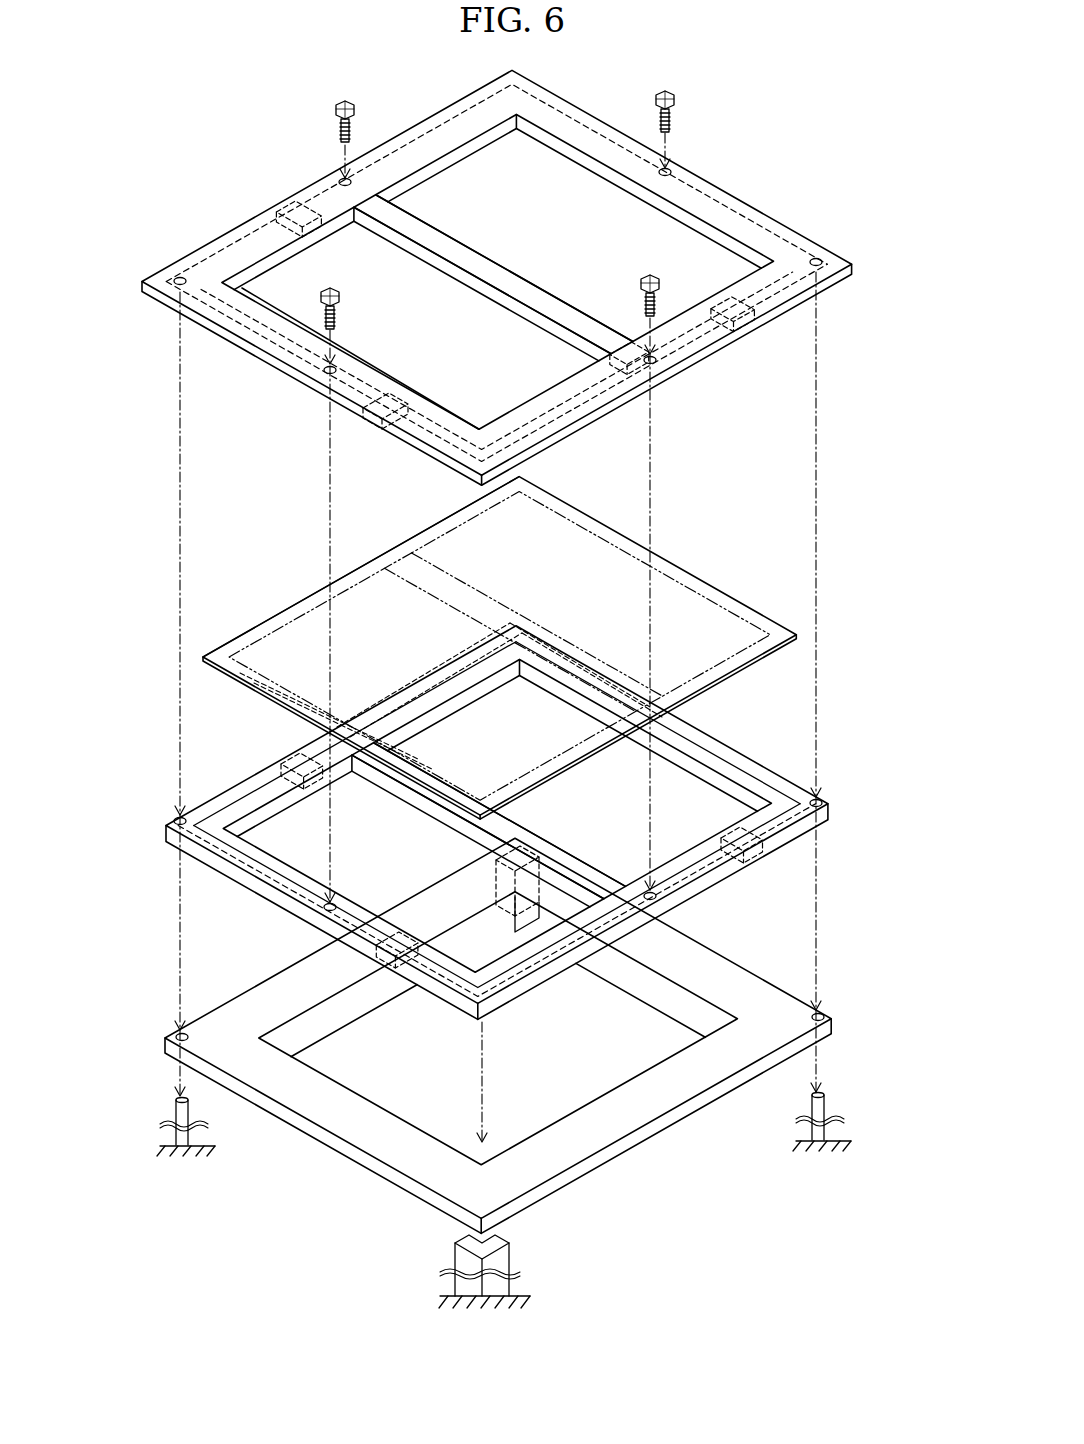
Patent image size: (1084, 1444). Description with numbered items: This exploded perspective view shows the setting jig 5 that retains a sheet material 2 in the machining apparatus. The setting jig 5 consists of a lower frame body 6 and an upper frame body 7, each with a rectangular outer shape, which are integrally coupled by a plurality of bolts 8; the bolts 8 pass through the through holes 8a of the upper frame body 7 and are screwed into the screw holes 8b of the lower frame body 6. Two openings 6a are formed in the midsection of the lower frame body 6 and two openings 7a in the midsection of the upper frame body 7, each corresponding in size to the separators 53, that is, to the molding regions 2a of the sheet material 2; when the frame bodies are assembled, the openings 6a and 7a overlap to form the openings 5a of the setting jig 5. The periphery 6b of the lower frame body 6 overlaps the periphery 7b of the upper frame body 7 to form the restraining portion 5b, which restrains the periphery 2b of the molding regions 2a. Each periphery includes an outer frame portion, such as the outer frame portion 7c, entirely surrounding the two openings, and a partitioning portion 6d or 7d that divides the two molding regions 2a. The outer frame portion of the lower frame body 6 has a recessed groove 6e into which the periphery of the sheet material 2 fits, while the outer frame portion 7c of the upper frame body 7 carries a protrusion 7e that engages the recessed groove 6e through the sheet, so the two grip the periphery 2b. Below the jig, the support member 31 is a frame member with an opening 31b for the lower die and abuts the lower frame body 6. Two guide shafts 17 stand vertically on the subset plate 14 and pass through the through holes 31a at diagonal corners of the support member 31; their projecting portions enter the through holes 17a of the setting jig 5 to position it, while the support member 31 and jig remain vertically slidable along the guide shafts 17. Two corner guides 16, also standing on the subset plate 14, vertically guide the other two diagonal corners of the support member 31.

The setting jig 5 is at (110, 129).
The openings 5a is at (543, 207).
The restraining portion 5b is at (437, 137).
The upper frame body 7 is at (497, 490).
The openings 7a is at (521, 212).
The periphery 7b is at (247, 247).
The outer frame portion 7c is at (593, 127).
The partitioning portion 7d is at (448, 252).
The protrusion 7e is at (290, 257).
The bolts 8 is at (336, 108).
The through holes 8a is at (676, 173).
The screw holes 8b is at (330, 910).
The through holes 17a is at (178, 280).
The sheet material 2 is at (495, 648).
The molding regions 2a is at (460, 545).
The periphery 2b is at (285, 617).
The separators 53 is at (672, 590).
The lower frame body 6 is at (497, 823).
The openings 6a is at (387, 872).
The periphery 6b is at (285, 758).
The partitioning portion 6d is at (500, 830).
The recessed groove 6e is at (718, 768).
The corner guides 16 is at (545, 958).
The support member 31 is at (498, 1035).
The through holes 31a is at (182, 1034).
The opening 31b is at (435, 1097).
The subset plate 14 is at (165, 1148).
The guide shafts 17 is at (195, 1125).